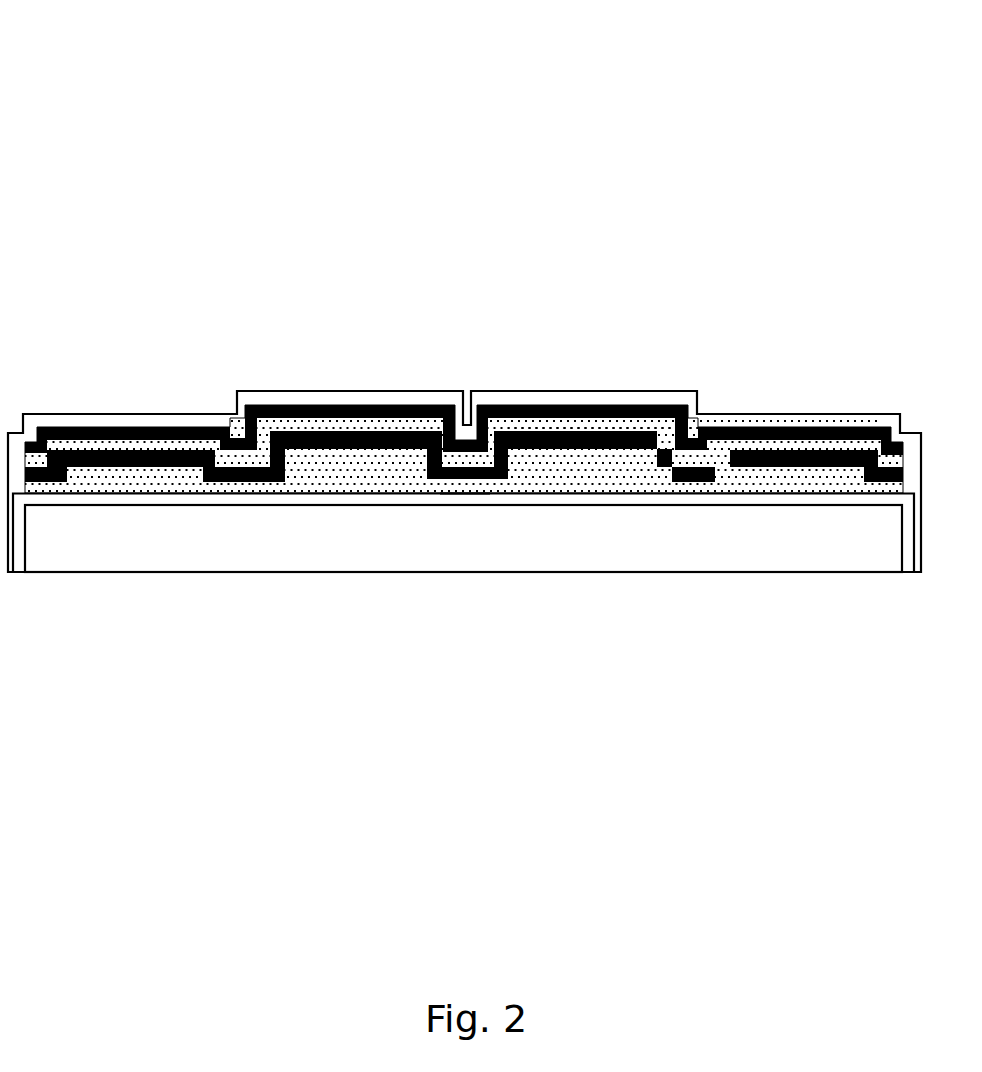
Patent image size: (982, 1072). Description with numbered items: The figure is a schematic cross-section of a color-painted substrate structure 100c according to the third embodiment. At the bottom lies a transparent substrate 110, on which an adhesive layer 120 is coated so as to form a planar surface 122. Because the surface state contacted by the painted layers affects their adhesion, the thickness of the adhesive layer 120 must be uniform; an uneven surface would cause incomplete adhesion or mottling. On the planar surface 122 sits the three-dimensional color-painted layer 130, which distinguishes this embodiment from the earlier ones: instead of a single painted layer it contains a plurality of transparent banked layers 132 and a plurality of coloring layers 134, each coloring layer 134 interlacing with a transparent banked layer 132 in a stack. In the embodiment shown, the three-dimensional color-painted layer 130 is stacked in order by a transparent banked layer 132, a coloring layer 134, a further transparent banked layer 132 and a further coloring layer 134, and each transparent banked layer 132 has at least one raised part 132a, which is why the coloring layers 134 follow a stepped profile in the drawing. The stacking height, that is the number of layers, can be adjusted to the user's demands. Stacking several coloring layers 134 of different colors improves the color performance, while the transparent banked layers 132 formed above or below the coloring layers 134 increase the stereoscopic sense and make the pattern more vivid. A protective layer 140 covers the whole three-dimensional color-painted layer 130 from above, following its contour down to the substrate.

The color-painted substrate structure 100c is at (88, 56).
The transparent substrate 110 is at (270, 558).
The adhesive layer 120 is at (397, 500).
The planar surface 122 is at (462, 497).
The three-dimensional color-painted layer 130 is at (220, 307).
The transparent banked layer 132 is at (134, 487).
The raised part 132a is at (610, 460).
The coloring layer 134 is at (191, 452).
The protective layer 140 is at (346, 390).